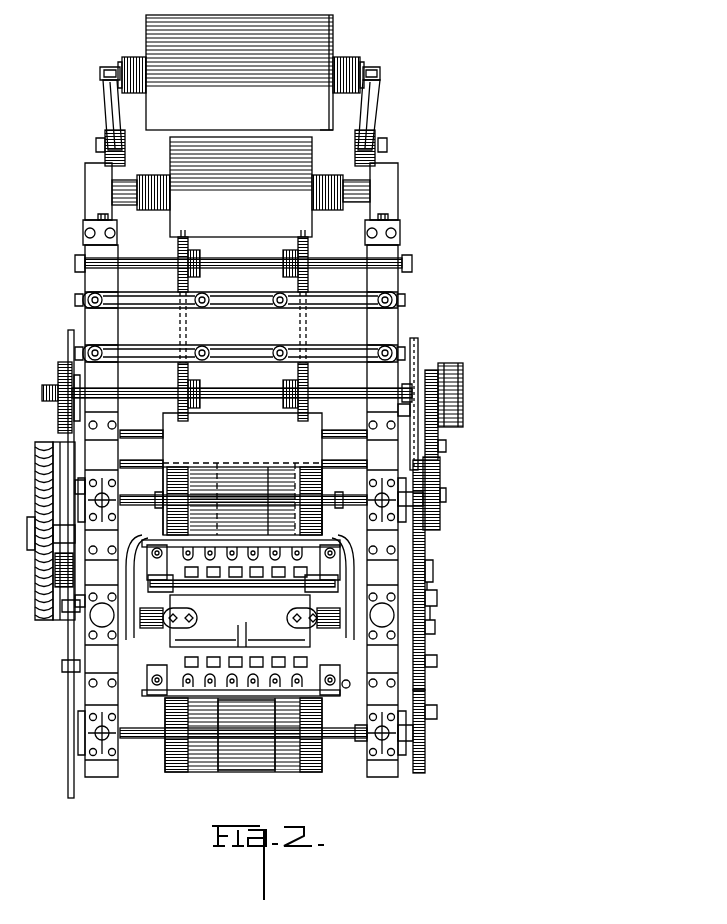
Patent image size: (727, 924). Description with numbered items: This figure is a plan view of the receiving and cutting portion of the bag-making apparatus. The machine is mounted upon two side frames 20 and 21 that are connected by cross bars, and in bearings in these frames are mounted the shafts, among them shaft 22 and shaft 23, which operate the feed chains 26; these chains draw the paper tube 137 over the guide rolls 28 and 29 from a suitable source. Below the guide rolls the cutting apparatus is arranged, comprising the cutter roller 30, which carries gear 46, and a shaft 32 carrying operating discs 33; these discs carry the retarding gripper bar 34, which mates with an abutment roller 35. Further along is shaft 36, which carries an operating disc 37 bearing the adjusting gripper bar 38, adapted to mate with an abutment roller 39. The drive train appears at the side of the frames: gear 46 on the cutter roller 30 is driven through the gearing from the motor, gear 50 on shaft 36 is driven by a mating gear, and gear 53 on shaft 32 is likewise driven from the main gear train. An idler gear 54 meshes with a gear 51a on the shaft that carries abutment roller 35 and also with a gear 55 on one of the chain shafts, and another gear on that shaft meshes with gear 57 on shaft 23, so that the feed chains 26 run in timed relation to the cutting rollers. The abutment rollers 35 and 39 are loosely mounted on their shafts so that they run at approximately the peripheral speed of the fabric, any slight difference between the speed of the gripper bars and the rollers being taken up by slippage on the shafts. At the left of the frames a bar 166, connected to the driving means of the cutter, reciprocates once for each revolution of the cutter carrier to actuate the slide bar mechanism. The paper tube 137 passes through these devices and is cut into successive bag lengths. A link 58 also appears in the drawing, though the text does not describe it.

The side frame 20 is at (395, 765).
The side frame 21 is at (100, 772).
The shaft 22 is at (234, 265).
The shaft 23 is at (232, 401).
The feed chain 26 is at (188, 290).
The guide roll 28 is at (146, 42).
The guide roll 29 is at (170, 160).
The cutter roller 30 is at (315, 641).
The shaft 32 is at (338, 497).
The operating disc 33 is at (176, 516).
The retarding gripper bar 34 is at (248, 496).
The abutment roller 35 is at (229, 487).
The shaft 36 is at (341, 739).
The operating disc 37 is at (310, 717).
The adjusting gripper bar 38 is at (255, 735).
The abutment roller 39 is at (224, 767).
The gear 46 is at (420, 626).
The gear 50 is at (428, 772).
The gear 51a is at (440, 492).
The gear 53 is at (410, 466).
The idler gear 54 is at (440, 458).
The gear 55 is at (433, 375).
The gear 57 is at (64, 362).
The link 58 is at (150, 628).
The paper tube 137 is at (327, 118).
The bar 166 is at (68, 760).